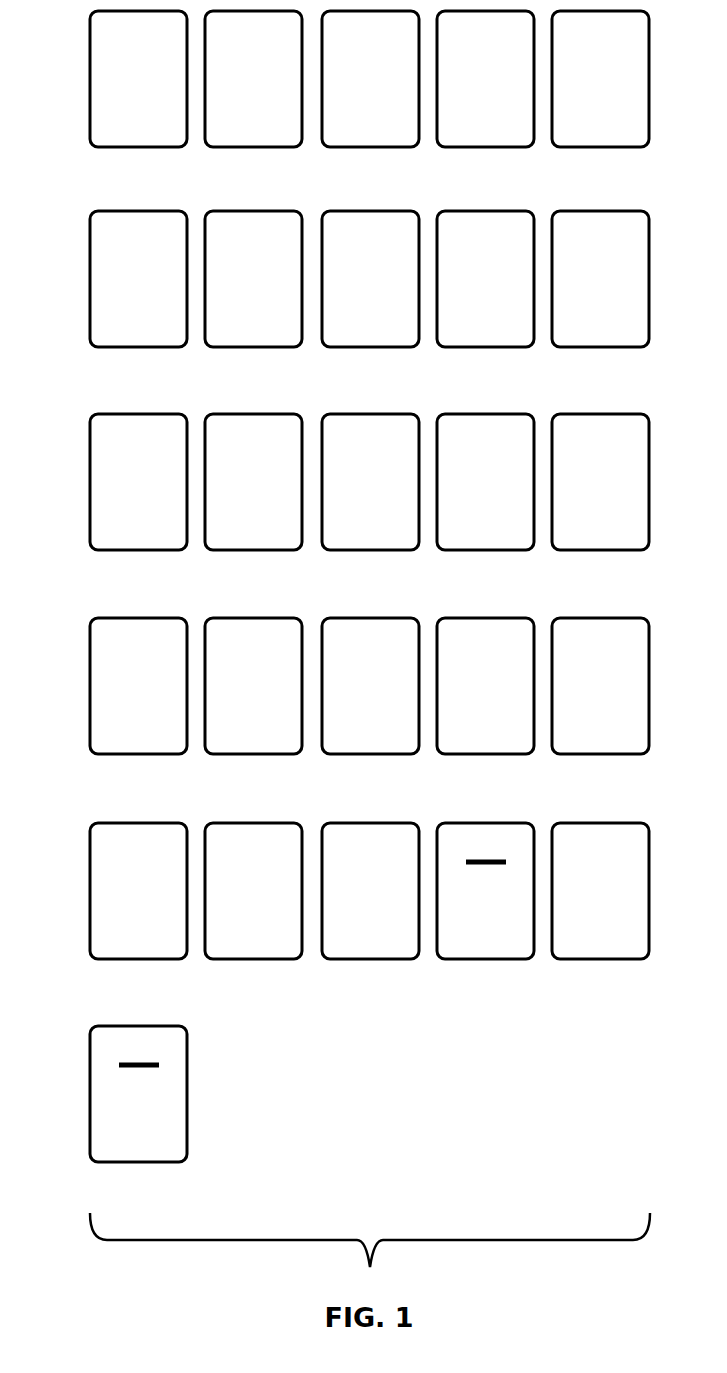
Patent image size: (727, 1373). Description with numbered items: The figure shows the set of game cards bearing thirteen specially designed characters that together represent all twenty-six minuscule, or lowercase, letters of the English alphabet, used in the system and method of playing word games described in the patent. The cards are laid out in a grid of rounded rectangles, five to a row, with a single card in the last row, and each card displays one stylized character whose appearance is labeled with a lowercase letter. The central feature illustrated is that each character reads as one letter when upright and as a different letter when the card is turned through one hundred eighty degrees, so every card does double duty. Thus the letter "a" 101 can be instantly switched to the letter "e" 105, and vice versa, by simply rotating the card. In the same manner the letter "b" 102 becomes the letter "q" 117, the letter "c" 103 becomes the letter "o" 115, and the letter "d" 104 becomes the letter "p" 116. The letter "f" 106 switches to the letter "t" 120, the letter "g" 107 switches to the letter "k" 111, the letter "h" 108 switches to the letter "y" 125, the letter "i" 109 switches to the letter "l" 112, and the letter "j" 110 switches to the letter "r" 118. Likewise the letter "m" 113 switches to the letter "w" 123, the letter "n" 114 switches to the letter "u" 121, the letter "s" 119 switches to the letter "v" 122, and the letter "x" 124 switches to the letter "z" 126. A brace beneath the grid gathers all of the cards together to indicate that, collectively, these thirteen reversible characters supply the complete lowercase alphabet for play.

The letter "a" 101 is at (140, 135).
The letter "b" 102 is at (255, 135).
The letter "c" 103 is at (372, 135).
The letter "d" 104 is at (487, 135).
The letter "e" 105 is at (602, 135).
The letter "f" 106 is at (140, 335).
The letter "g" 107 is at (255, 335).
The letter "h" 108 is at (372, 335).
The letter "i" 109 is at (487, 335).
The letter "j" 110 is at (602, 335).
The letter "k" 111 is at (140, 538).
The letter "l" 112 is at (255, 538).
The letter "m" 113 is at (372, 538).
The letter "n" 114 is at (487, 538).
The letter "o" 115 is at (602, 538).
The letter "p" 116 is at (140, 742).
The letter "q" 117 is at (255, 742).
The letter "r" 118 is at (372, 742).
The letter "s" 119 is at (487, 742).
The letter "t" 120 is at (602, 742).
The letter "u" 121 is at (140, 947).
The letter "v" 122 is at (255, 947).
The letter "w" 123 is at (372, 947).
The letter "x" 124 is at (487, 947).
The letter "y" 125 is at (602, 947).
The letter "z" 126 is at (140, 1150).